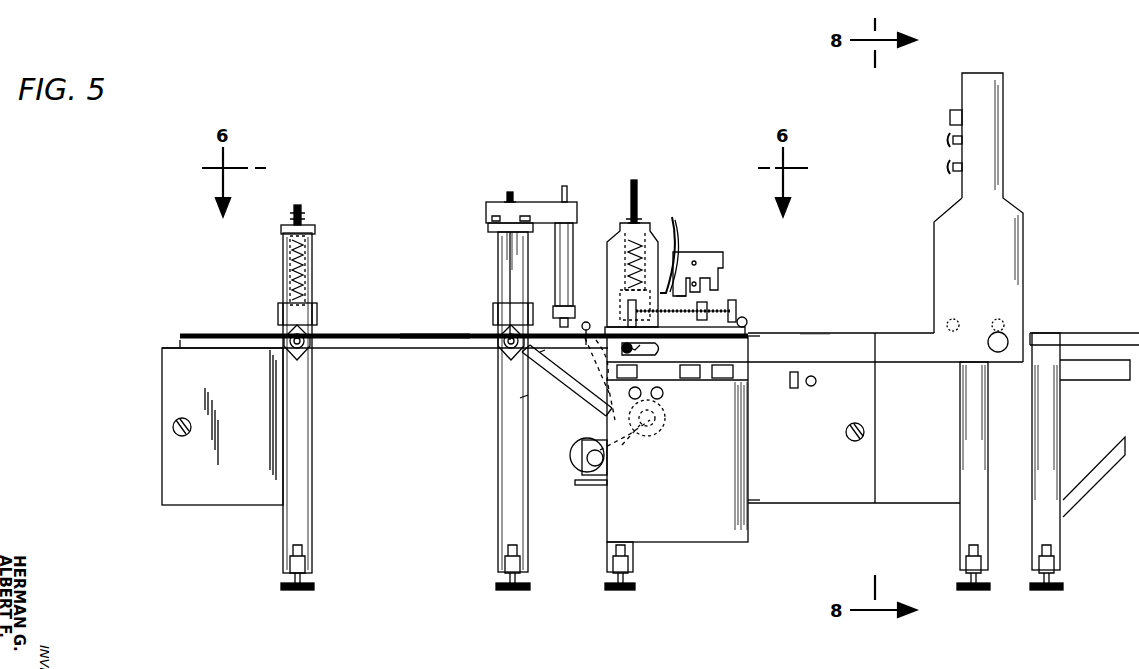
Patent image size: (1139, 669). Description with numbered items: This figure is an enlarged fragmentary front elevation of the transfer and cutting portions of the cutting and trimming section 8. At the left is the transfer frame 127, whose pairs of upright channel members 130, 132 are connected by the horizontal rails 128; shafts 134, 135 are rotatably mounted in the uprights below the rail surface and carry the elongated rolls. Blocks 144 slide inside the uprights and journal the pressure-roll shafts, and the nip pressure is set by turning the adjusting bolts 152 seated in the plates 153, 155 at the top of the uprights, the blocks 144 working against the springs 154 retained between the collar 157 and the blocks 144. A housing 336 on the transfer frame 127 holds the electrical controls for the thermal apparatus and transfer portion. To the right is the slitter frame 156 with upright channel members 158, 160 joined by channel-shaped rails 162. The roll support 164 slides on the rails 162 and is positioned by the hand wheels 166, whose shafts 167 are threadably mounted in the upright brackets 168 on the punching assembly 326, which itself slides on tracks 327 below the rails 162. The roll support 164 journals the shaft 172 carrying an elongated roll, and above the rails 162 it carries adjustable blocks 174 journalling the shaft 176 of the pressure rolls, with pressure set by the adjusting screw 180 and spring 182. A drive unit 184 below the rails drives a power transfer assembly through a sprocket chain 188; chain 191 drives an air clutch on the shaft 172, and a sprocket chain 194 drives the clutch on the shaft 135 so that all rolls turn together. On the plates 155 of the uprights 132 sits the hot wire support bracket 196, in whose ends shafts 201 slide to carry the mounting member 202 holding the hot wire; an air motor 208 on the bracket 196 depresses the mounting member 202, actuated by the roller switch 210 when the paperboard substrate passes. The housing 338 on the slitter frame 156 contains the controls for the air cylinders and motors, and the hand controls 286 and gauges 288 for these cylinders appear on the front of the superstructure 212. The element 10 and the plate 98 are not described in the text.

The cutting and trimming section 8 is at (402, 330).
The bracket 10 is at (1066, 332).
The top plate 98 is at (497, 202).
The transfer frame 127 is at (318, 440).
The horizontal rails 128 is at (405, 342).
The upright channel members 130 is at (314, 516).
The upright channel members 132 is at (497, 457).
The shaft 134 is at (306, 353).
The shaft 135 is at (506, 356).
The blocks 144 is at (278, 318).
The adjusting bolts 152 is at (302, 210).
The plate 153 is at (316, 228).
The springs 154 is at (290, 270).
The plates 155 is at (488, 228).
The slitter frame 156 is at (886, 330).
The collar 157 is at (290, 248).
The upright channel members 158 is at (633, 562).
The upright channel members 160 is at (958, 526).
The channel-shaped rails 162 is at (756, 332).
The roll support 164 is at (612, 208).
The hand wheels 166 is at (737, 306).
The shafts 167 is at (722, 292).
The upright brackets 168 is at (590, 155).
The shaft 172 is at (612, 418).
The adjustable blocks 174 is at (565, 384).
The shaft 176 is at (664, 430).
The adjusting screw 180 is at (637, 183).
The spring 182 is at (672, 248).
The drive unit 184 is at (576, 468).
The sprocket chain 188 is at (633, 450).
The chain 191 is at (678, 365).
The sprocket chain 194 is at (528, 395).
The hot wire support bracket 196 is at (578, 172).
The shafts 201 is at (522, 290).
The mounting member 202 is at (588, 320).
The air motor 208 is at (557, 280).
The switch 210 is at (540, 352).
The superstructure 212 is at (1028, 250).
The hand controls 286 is at (947, 168).
The gauges 288 is at (948, 118).
The punching assembly 326 is at (718, 263).
The tracks 327 is at (820, 332).
The housing 336 is at (206, 505).
The housing 338 is at (846, 486).